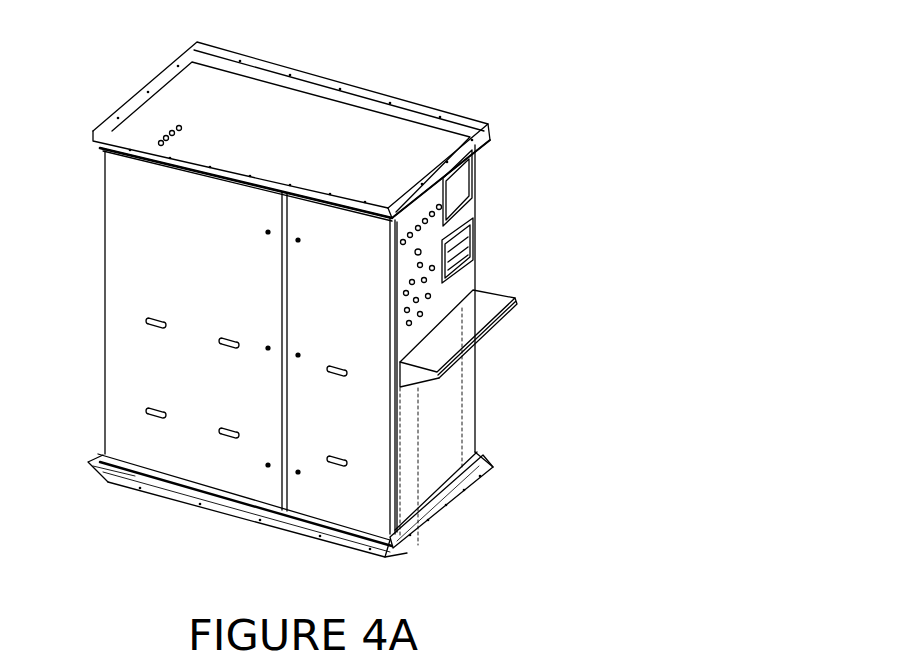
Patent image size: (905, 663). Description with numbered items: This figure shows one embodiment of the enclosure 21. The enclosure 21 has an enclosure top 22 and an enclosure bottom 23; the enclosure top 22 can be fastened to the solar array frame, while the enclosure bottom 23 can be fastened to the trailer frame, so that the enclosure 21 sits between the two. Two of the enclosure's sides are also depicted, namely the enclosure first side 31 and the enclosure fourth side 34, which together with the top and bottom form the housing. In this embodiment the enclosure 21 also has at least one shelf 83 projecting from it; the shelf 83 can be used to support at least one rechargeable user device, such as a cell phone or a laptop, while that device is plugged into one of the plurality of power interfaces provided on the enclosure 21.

The enclosure 21 is at (291, 299).
The enclosure top 22 is at (303, 133).
The enclosure bottom 23 is at (115, 470).
The enclosure first side 31 is at (445, 412).
The enclosure fourth side 34 is at (200, 403).
The shelf 83 is at (493, 300).